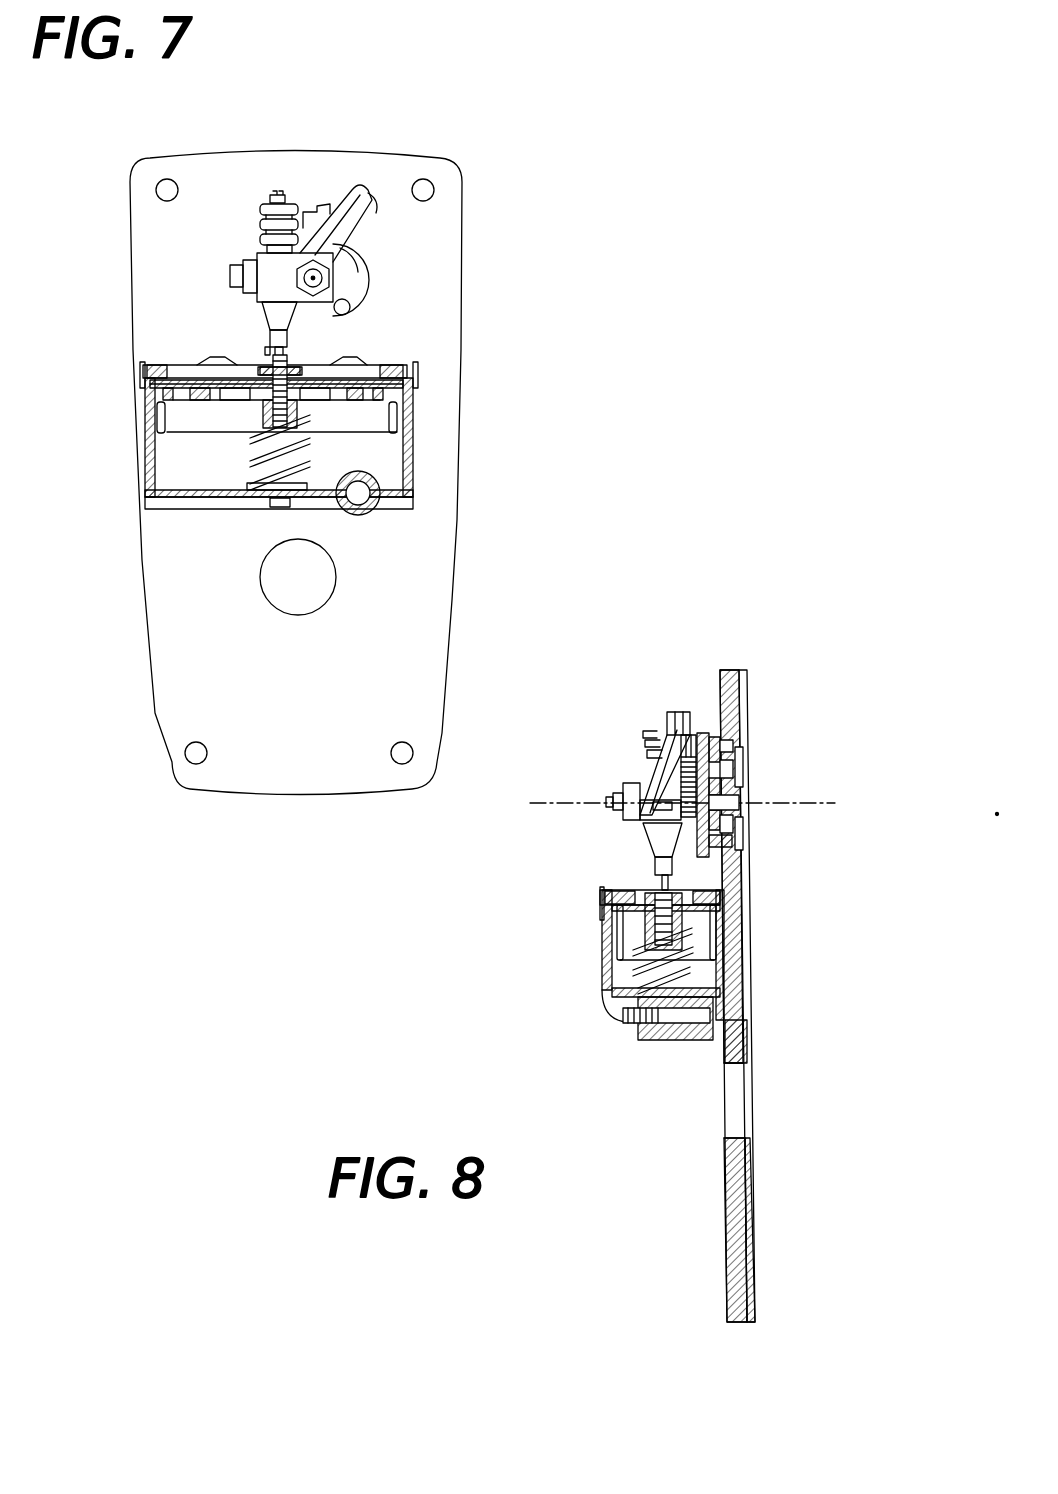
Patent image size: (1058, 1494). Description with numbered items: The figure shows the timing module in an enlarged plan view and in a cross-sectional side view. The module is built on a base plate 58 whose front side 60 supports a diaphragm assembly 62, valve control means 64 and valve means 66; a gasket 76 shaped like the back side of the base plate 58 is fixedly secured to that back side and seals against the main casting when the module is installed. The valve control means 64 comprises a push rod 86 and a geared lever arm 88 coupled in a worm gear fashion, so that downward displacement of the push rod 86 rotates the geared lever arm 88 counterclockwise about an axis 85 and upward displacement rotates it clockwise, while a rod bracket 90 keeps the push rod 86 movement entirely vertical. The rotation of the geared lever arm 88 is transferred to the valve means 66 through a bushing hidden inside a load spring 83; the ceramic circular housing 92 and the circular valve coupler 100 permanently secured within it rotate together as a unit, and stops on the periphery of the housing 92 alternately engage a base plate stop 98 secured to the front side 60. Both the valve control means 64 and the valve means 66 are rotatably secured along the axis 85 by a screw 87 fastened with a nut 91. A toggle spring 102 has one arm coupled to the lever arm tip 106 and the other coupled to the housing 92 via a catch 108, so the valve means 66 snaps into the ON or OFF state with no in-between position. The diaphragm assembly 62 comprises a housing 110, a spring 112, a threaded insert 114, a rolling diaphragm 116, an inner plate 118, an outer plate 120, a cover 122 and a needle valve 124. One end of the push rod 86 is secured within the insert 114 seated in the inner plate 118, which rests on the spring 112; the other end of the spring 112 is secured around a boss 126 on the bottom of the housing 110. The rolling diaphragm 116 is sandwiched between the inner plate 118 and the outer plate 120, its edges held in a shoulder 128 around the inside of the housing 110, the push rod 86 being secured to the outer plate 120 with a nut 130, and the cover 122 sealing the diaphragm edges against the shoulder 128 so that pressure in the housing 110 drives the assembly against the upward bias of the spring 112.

In FIG. 7, the base plate 58 is at (152, 716).
In FIG. 8, the base plate 58 is at (724, 1274).
In FIG. 7, the front side 60 is at (408, 611).
In FIG. 8, the front side 60 is at (727, 1190).
In FIG. 8, the diaphragm assembly 62 is at (598, 983).
In FIG. 8, the valve control means 64 is at (638, 729).
In FIG. 8, the valve means 66 is at (708, 672).
In FIG. 8, the gasket 76 is at (758, 1194).
In FIG. 8, the load spring 83 is at (710, 804).
In FIG. 8, the axis 85 is at (752, 803).
In FIG. 7, the push rod 86 is at (262, 205).
In FIG. 8, the push rod 86 is at (688, 776).
In FIG. 8, the screw 87 is at (756, 812).
In FIG. 7, the geared lever arm 88 is at (338, 204).
In FIG. 8, the geared lever arm 88 is at (665, 763).
In FIG. 7, the rod bracket 90 is at (254, 302).
In FIG. 8, the rod bracket 90 is at (660, 810).
In FIG. 7, the nut 91 is at (297, 267).
In FIG. 8, the nut 91 is at (624, 786).
In FIG. 8, the circular housing 92 is at (708, 730).
In FIG. 7, the base plate stop 98 is at (229, 276).
In FIG. 8, the valve coupler 100 is at (724, 750).
In FIG. 7, the toggle spring 102 is at (370, 238).
In FIG. 8, the lever arm tip 106 is at (690, 712).
In FIG. 7, the catch 108 is at (351, 310).
In FIG. 7, the housing 110 is at (413, 446).
In FIG. 7, the spring 112 is at (256, 467).
In FIG. 8, the spring 112 is at (688, 970).
In FIG. 7, the insert 114 is at (260, 404).
In FIG. 7, the rolling diaphragm 116 is at (398, 415).
In FIG. 7, the inner plate 118 is at (322, 401).
In FIG. 7, the outer plate 120 is at (372, 373).
In FIG. 8, the outer plate 120 is at (608, 877).
In FIG. 7, the cover 122 is at (158, 362).
In FIG. 7, the needle valve 124 is at (376, 504).
In FIG. 8, the needle valve 124 is at (618, 1033).
In FIG. 7, the boss 126 is at (270, 488).
In FIG. 8, the shoulder 128 is at (606, 921).
In FIG. 7, the nut 130 is at (298, 358).